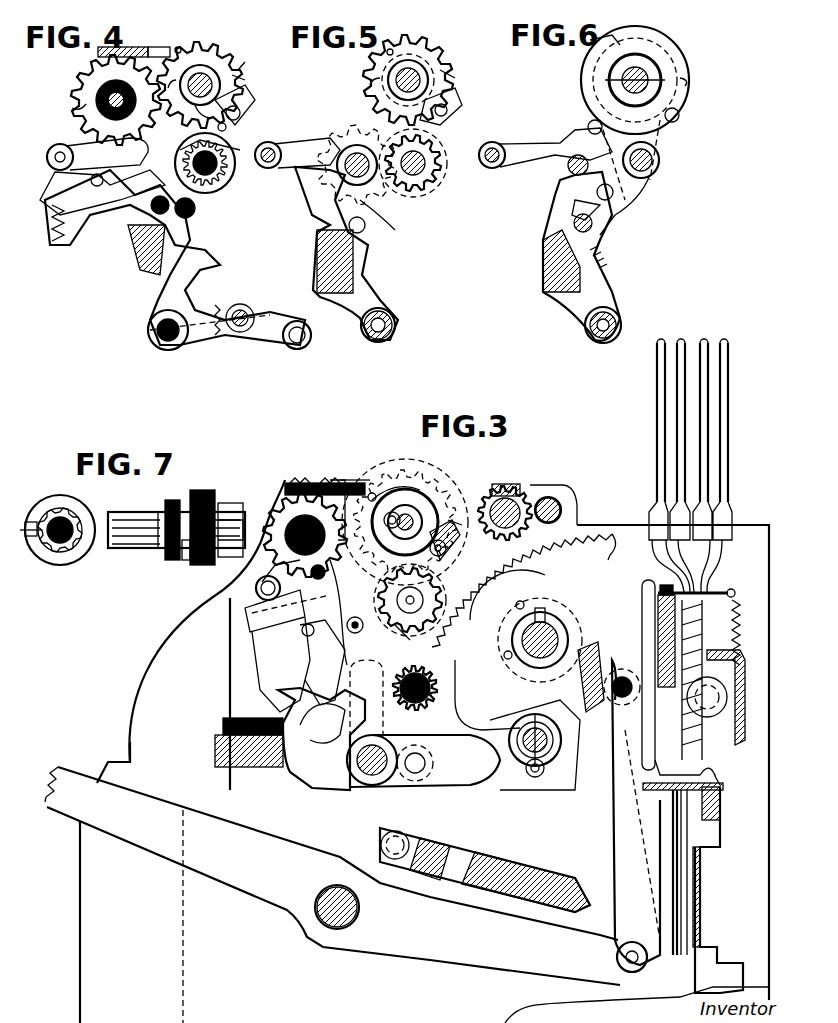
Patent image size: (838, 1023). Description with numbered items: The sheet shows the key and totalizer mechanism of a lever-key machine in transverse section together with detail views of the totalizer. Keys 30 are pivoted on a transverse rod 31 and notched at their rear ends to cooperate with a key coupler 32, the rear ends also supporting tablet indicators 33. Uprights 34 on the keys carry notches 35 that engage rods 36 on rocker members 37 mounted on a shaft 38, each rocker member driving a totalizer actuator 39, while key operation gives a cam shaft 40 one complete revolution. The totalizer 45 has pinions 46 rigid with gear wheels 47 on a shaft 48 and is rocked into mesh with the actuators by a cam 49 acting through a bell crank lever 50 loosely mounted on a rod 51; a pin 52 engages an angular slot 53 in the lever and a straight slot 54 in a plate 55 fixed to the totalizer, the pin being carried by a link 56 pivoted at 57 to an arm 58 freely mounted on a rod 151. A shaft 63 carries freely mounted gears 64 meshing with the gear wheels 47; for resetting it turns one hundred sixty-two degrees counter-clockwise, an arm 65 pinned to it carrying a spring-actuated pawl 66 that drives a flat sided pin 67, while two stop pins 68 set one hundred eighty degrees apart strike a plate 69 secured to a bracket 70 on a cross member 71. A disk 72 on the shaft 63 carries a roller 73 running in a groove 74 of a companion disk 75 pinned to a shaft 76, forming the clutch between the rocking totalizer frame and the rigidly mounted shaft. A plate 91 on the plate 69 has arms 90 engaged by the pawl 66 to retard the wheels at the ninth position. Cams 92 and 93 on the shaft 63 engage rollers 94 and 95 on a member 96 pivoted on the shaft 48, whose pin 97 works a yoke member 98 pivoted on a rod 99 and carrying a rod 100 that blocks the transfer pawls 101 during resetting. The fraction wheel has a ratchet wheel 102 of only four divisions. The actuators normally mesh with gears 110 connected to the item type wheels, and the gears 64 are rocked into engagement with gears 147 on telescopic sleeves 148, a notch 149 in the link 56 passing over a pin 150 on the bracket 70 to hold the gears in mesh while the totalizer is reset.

In FIG. 3, the keys 30 is at (182, 860).
In FIG. 3, the transverse rod 31 is at (360, 912).
In FIG. 3, the key coupler 32 is at (478, 868).
In FIG. 3, the tablet indicators 33 is at (712, 586).
In FIG. 3, the uprights 34 is at (622, 815).
In FIG. 3, the notches 35 is at (656, 700).
In FIG. 3, the rods 36 is at (626, 675).
In FIG. 3, the rocker members 37 is at (580, 645).
In FIG. 3, the shaft 38 is at (545, 618).
In FIG. 3, the totalizer actuator 39 is at (583, 560).
In FIG. 3, the cam shaft 40 is at (562, 740).
In FIG. 4, the totalizer 45 is at (158, 283).
In FIG. 5, the totalizer 45 is at (362, 278).
In FIG. 6, the totalizer 45 is at (550, 255).
In FIG. 3, the totalizer 45 is at (288, 742).
In FIG. 4, the pinions 46 is at (226, 180).
In FIG. 3, the pinions 46 is at (428, 612).
In FIG. 5, the gear wheels 47 is at (412, 203).
In FIG. 3, the gear wheels 47 is at (442, 596).
In FIG. 4, the shaft 48 is at (228, 192).
In FIG. 5, the shaft 48 is at (432, 178).
In FIG. 6, the shaft 48 is at (656, 176).
In FIG. 3, the shaft 48 is at (410, 628).
In FIG. 3, the cam 49 is at (505, 738).
In FIG. 3, the bell crank lever 50 is at (512, 778).
In FIG. 3, the rod 51 is at (370, 772).
In FIG. 3, the pin 52 is at (360, 636).
In FIG. 3, the angular slot 53 is at (288, 600).
In FIG. 3, the straight slot 54 is at (332, 655).
In FIG. 3, the plate 55 is at (388, 708).
In FIG. 3, the link 56 is at (302, 728).
In FIG. 3, the pivot 57 is at (338, 478).
In FIG. 3, the arm 58 is at (478, 500).
In FIG. 4, the shaft 63 is at (222, 58).
In FIG. 5, the shaft 63 is at (425, 72).
In FIG. 6, the shaft 63 is at (650, 78).
In FIG. 7, the shaft 63 is at (240, 518).
In FIG. 3, the shaft 63 is at (415, 515).
In FIG. 4, the gears 64 is at (248, 78).
In FIG. 5, the gears 64 is at (458, 76).
In FIG. 3, the gears 64 is at (395, 498).
In FIG. 4, the arm 65 is at (208, 112).
In FIG. 4, the spring-actuated pawl 66 is at (257, 94).
In FIG. 5, the spring-actuated pawl 66 is at (463, 95).
In FIG. 3, the spring-actuated pawl 66 is at (448, 548).
In FIG. 4, the flat sided pin 67 is at (246, 68).
In FIG. 5, the flat sided pin 67 is at (366, 90).
In FIG. 4, the stop pins 68 is at (182, 51).
In FIG. 5, the stop pins 68 is at (393, 52).
In FIG. 3, the stop pins 68 is at (372, 492).
In FIG. 4, the plate 69 is at (156, 47).
In FIG. 3, the plate 69 is at (352, 478).
In FIG. 3, the bracket 70 is at (240, 672).
In FIG. 3, the cross member 71 is at (213, 752).
In FIG. 7, the disk 72 is at (212, 494).
In FIG. 3, the disk 72 is at (412, 512).
In FIG. 7, the roller 73 is at (30, 540).
In FIG. 7, the groove 74 is at (82, 545).
In FIG. 7, the companion disk 75 is at (47, 498).
In FIG. 7, the shaft 76 is at (135, 512).
In FIG. 3, the arms 90 is at (466, 528).
In FIG. 3, the plate 91 is at (312, 481).
In FIG. 6, the cam 92 is at (682, 93).
In FIG. 6, the cam 93 is at (688, 80).
In FIG. 6, the roller 94 is at (681, 116).
In FIG. 6, the roller 95 is at (590, 122).
In FIG. 6, the member 96 is at (632, 202).
In FIG. 6, the pin 97 is at (596, 195).
In FIG. 5, the yoke member 98 is at (382, 225).
In FIG. 6, the yoke member 98 is at (578, 212).
In FIG. 5, the rod 99 is at (365, 232).
In FIG. 6, the rod 99 is at (573, 226).
In FIG. 4, the rod 100 is at (55, 150).
In FIG. 5, the rod 100 is at (280, 142).
In FIG. 6, the rod 100 is at (500, 142).
In FIG. 3, the rod 100 is at (260, 592).
In FIG. 4, the transfer pawls 101 is at (58, 183).
In FIG. 4, the ratchet wheel 102 is at (196, 200).
In FIG. 3, the gears 110 is at (430, 702).
In FIG. 4, the gears 147 is at (78, 90).
In FIG. 3, the gears 147 is at (275, 500).
In FIG. 4, the telescopic sleeves 148 is at (80, 107).
In FIG. 3, the telescopic sleeves 148 is at (310, 571).
In FIG. 3, the notch 149 is at (300, 645).
In FIG. 3, the pin 150 is at (282, 588).
In FIG. 3, the rod 151 is at (545, 496).